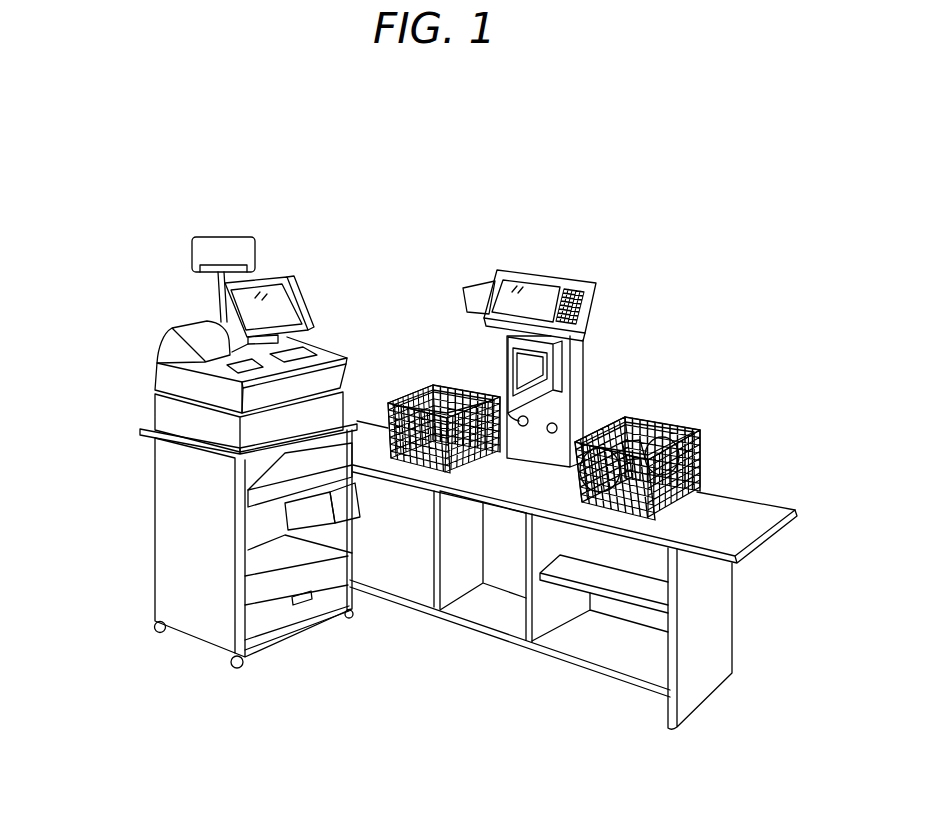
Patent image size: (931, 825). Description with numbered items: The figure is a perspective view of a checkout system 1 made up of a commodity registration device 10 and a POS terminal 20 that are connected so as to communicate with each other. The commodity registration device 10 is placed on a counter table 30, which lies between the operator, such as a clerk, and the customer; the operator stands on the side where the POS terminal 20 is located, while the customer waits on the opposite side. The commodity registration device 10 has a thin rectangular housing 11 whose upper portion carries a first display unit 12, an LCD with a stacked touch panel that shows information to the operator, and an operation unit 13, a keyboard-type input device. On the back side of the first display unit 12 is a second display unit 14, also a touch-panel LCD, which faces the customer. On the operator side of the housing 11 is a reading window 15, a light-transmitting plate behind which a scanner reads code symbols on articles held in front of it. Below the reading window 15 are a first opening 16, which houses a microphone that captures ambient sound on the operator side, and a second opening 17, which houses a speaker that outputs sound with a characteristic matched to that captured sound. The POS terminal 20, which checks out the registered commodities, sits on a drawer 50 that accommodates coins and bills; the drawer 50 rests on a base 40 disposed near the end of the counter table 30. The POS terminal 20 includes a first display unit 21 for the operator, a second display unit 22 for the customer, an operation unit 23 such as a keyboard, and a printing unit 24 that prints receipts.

The checkout system 1 is at (411, 132).
The commodity registration device 10 is at (594, 201).
The housing 11 is at (578, 360).
The first display unit 12 is at (515, 272).
The operation unit 13 is at (568, 292).
The second display unit 14 is at (475, 298).
The reading window 15 is at (520, 360).
The first opening 16 is at (558, 427).
The second opening 17 is at (506, 370).
The POS terminal 20 is at (352, 201).
The first display unit 21 is at (283, 295).
The second display unit 22 is at (255, 252).
The operation unit 23 is at (310, 345).
The printing unit 24 is at (200, 327).
The counter table 30 is at (758, 512).
The base 40 is at (172, 505).
The drawer 50 is at (172, 412).